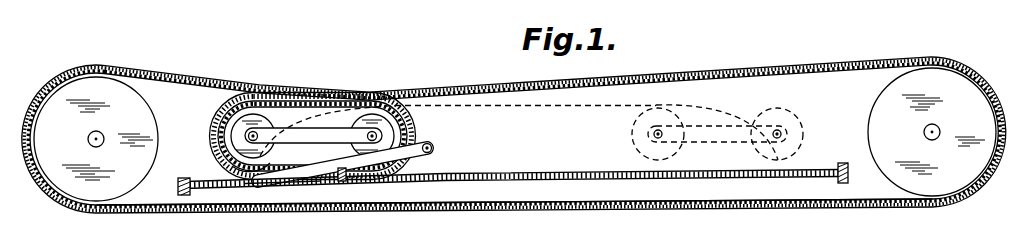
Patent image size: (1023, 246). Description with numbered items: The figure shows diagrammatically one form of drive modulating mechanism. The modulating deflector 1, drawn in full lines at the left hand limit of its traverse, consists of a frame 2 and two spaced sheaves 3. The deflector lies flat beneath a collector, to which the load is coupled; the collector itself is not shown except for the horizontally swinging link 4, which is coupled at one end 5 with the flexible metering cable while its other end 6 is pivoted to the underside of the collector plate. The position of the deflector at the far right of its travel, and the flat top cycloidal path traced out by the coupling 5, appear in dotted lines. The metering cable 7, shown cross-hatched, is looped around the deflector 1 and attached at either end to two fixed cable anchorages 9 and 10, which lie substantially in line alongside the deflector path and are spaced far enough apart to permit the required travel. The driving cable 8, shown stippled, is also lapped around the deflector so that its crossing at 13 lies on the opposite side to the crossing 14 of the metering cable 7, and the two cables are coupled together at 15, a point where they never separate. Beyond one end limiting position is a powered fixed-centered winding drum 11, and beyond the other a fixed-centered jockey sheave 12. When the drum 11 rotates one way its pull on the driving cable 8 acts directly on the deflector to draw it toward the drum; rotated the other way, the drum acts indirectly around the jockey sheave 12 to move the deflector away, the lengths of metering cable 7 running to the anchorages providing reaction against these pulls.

The modulating deflector 1 is at (313, 148).
The frame 2 is at (308, 140).
The sheaves 3 is at (252, 112).
The horizontally swinging link 4 is at (283, 174).
The coupling 5 is at (257, 170).
The other end of the link 6 is at (434, 142).
The metering cable 7 is at (466, 181).
The driving cable 8 is at (598, 206).
The fixed cable anchorage 9 is at (182, 196).
The fixed cable anchorage 10 is at (842, 184).
The winding drum 11 is at (65, 183).
The jockey sheave 12 is at (938, 183).
The crossing of driving cable 13 is at (308, 90).
The crossing of metering cable 14 is at (382, 181).
The cable coupling point 15 is at (343, 174).